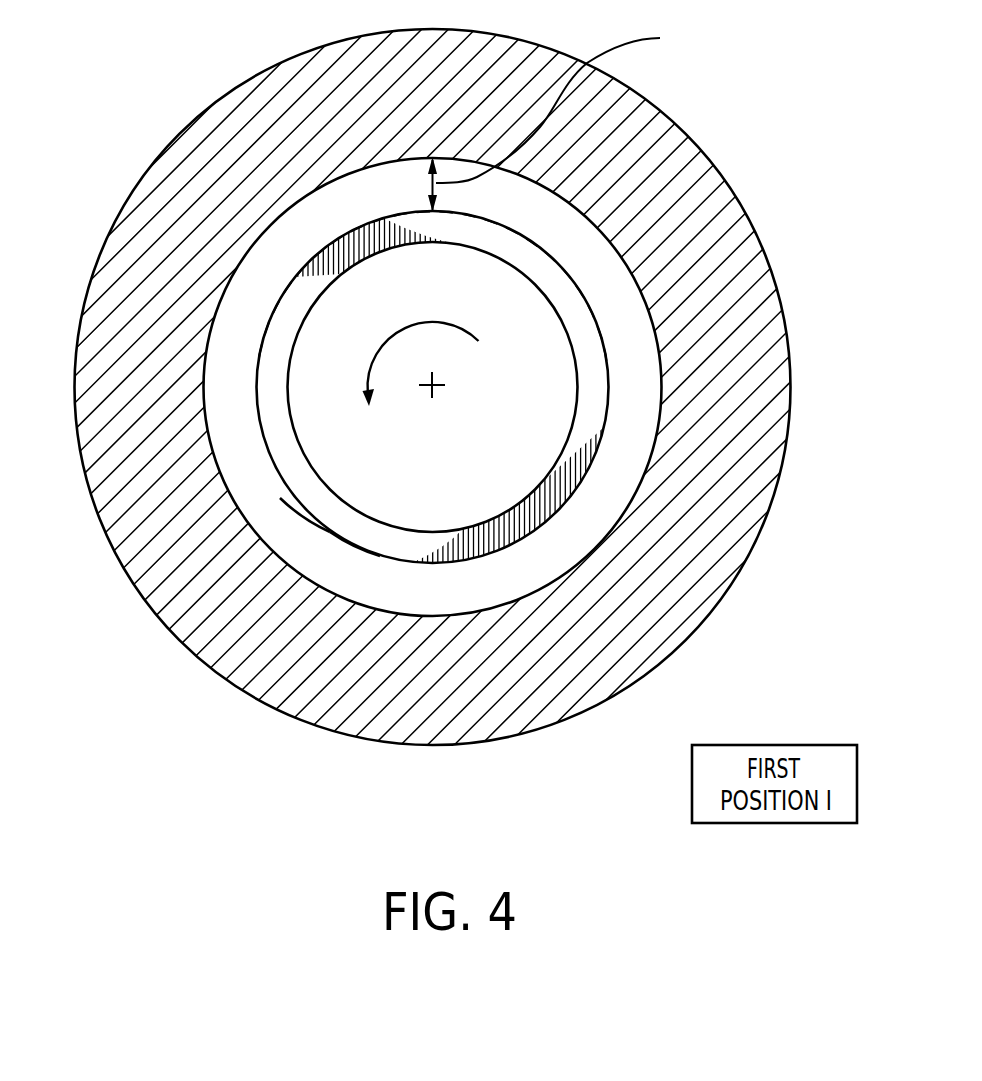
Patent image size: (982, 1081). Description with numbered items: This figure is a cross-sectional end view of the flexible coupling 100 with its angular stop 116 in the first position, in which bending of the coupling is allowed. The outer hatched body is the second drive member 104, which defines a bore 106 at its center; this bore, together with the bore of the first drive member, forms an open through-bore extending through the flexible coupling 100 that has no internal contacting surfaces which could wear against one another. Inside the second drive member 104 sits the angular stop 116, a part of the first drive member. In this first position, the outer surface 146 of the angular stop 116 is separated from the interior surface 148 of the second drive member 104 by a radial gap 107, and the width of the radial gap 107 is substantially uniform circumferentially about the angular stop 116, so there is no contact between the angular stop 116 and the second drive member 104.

The flexible coupling 100 is at (491, 450).
The second drive member 104 is at (657, 183).
The bore 106 is at (435, 389).
The radial gap 107 is at (468, 600).
The angular stop 116 is at (587, 358).
The outer surface 146 is at (307, 510).
The interior surface 148 is at (318, 590).